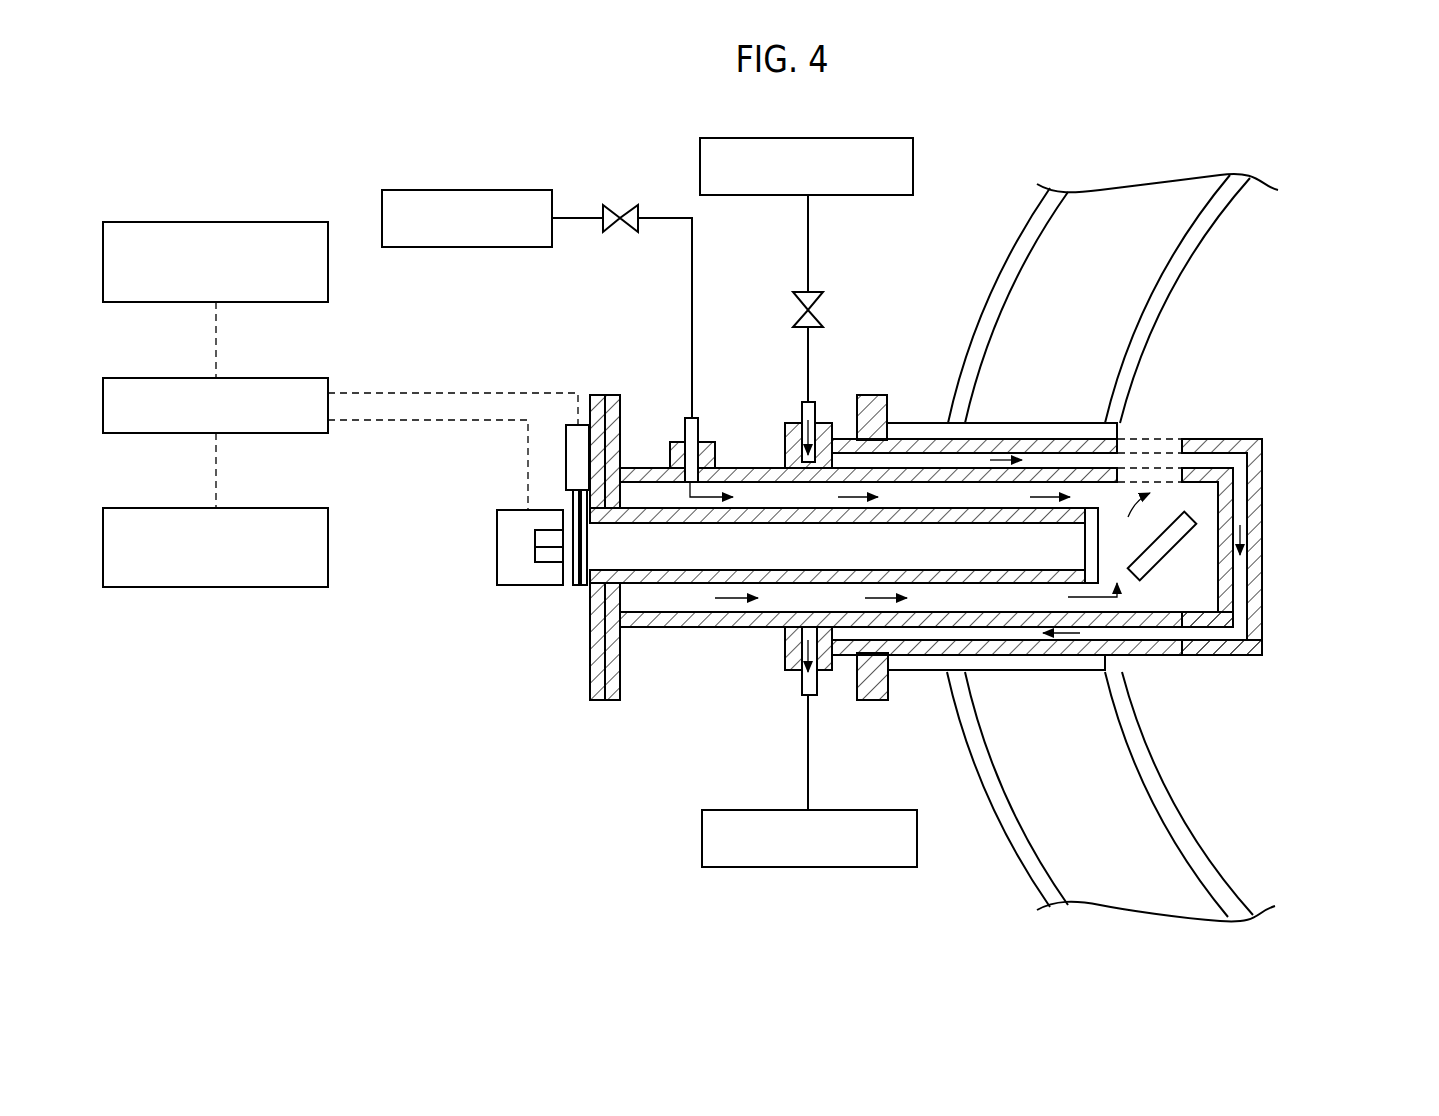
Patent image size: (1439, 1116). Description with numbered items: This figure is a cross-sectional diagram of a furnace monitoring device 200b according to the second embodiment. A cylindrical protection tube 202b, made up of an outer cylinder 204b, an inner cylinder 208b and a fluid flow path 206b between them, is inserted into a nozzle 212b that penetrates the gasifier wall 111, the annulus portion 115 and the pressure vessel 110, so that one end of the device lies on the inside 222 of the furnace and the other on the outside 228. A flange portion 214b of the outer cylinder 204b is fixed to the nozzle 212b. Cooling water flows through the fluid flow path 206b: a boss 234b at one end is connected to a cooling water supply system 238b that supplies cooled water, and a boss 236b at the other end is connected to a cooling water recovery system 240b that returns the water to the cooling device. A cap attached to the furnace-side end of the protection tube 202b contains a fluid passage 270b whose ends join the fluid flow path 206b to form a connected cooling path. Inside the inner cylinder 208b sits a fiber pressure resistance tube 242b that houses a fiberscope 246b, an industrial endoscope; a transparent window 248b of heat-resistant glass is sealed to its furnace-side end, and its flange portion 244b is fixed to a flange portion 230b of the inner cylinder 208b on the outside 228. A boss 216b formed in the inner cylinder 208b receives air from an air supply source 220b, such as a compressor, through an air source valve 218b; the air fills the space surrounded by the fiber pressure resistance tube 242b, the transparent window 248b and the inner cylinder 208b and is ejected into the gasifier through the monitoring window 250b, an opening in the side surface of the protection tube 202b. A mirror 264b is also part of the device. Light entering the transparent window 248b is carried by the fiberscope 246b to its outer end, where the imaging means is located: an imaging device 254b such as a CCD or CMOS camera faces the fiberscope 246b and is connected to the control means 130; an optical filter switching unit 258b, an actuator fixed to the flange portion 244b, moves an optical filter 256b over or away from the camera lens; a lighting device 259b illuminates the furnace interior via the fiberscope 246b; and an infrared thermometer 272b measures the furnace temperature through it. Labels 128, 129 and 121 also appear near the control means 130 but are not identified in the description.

The burner inlet cutoff valve 128 is at (226, 246).
The burner inlet cutoff valve 129 is at (258, 222).
The control means 130 is at (266, 378).
The gasifier outlet gas thermometer 121 is at (266, 508).
The air supply source 220b is at (482, 190).
The air source valve 218b is at (628, 205).
The cooling water supply system 238b is at (846, 138).
The cooling water recovery system 240b is at (846, 810).
The flange portion 214b is at (858, 395).
The boss 216b is at (700, 417).
The boss 234b is at (802, 400).
The boss 236b is at (802, 697).
The nozzle 212b is at (880, 395).
The flange portion 244b is at (597, 395).
The flange portion 230b is at (615, 395).
The optical filter switching unit 258b is at (552, 425).
The optical filter 256b is at (578, 588).
The imaging device 254b is at (507, 587).
The lighting device 259b is at (535, 555).
The infrared thermometer 272b is at (535, 533).
The fiber pressure resistance tube 242b is at (698, 578).
The fiberscope 246b is at (1025, 553).
The transparent window 248b is at (1093, 525).
The monitoring window 250b is at (1182, 435).
The fluid passage 270b is at (1213, 460).
The mirror 264b is at (1200, 507).
The outer cylinder 204b is at (1165, 648).
The fluid flow path 206b is at (1148, 634).
The inner cylinder 208b is at (1132, 620).
The protection tube 202b is at (1098, 600).
The inside of the furnace 222 is at (1410, 562).
The outside of the furnace 228 is at (433, 587).
The furnace monitoring device 200b is at (905, 553).
The pressure vessel 110 is at (1027, 236).
The gasifier wall 111 is at (1162, 272).
The annulus portion 115 is at (1118, 222).